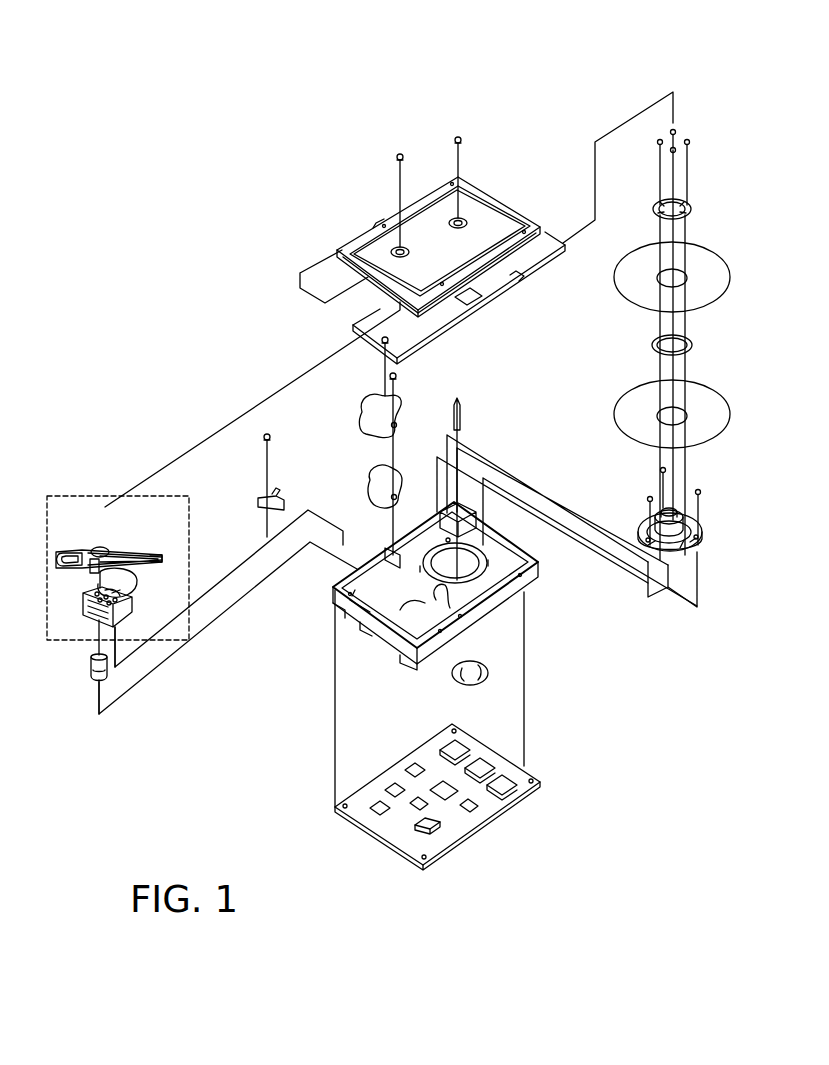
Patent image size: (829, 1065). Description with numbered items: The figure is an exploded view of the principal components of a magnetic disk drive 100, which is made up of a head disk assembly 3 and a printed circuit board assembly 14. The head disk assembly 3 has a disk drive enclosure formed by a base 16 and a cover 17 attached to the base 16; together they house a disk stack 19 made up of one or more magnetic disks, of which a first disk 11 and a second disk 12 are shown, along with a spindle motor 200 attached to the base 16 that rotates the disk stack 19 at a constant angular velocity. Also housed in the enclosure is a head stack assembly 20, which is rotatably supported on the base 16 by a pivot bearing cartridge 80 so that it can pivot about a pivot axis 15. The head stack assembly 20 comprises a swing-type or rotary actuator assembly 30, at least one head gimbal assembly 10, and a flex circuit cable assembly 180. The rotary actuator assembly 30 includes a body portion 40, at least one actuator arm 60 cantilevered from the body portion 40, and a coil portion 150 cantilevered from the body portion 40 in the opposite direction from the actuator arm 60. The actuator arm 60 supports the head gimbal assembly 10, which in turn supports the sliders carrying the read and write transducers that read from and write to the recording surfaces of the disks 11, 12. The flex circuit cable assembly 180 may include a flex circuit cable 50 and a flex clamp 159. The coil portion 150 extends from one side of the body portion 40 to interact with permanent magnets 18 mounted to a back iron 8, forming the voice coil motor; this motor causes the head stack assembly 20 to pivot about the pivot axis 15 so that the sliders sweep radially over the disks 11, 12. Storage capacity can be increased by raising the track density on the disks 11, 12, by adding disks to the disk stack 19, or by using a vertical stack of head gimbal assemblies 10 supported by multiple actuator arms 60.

The disk drive 10 is at (246, 60).
The head stack assembly 3 is at (355, 555).
The base plate 8 is at (480, 307).
The housing 11 is at (608, 722).
The disks 12 is at (600, 353).
The printed circuit board 14 is at (478, 826).
The pivot shaft 15 is at (400, 465).
The frame 16 is at (530, 588).
The cover 17 is at (357, 240).
The side plates 18 is at (332, 403).
The disk 19 is at (648, 272).
The latch assembly 20 is at (78, 495).
The latch lever 30 is at (133, 526).
The pivot disc 40 is at (98, 547).
The latch arm 50 is at (62, 568).
The pivot pin 60 is at (118, 550).
The bushing 80 is at (92, 668).
The magnetic disk drive 100 is at (160, 557).
The coil portion 150 is at (132, 590).
The flex clamp 159 is at (114, 620).
The flex circuit cable assembly 180 is at (142, 610).
The spindle motor 200 is at (638, 528).